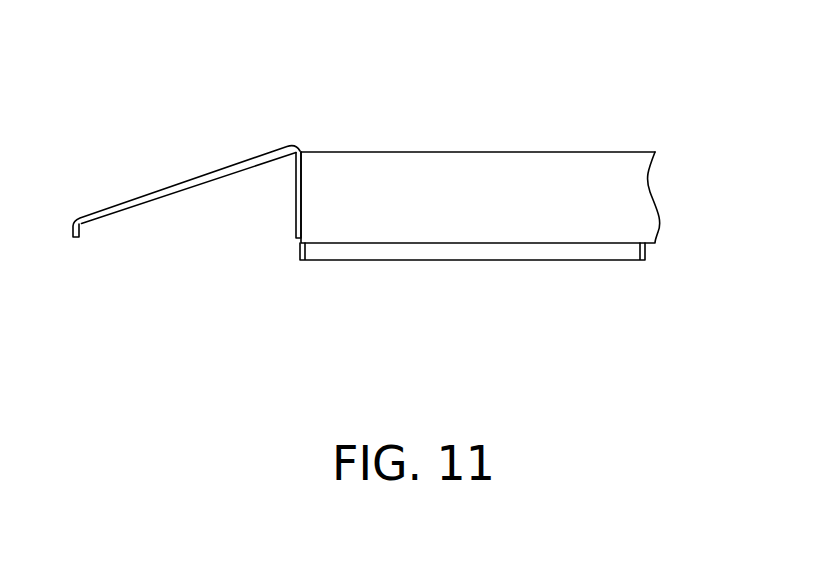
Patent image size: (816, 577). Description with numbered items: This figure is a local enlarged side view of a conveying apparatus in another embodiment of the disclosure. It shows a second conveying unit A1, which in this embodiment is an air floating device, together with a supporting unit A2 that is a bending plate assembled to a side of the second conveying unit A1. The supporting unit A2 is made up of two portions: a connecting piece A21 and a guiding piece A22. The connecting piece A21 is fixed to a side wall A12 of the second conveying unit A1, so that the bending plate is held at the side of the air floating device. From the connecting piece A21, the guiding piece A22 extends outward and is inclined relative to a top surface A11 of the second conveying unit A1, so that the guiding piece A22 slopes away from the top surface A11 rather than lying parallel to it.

The second conveying unit A1 is at (533, 218).
The top surface A11 is at (494, 147).
The side wall A12 is at (302, 210).
The supporting unit A2 is at (187, 131).
The connecting piece A21 is at (294, 191).
The guiding piece A22 is at (173, 188).